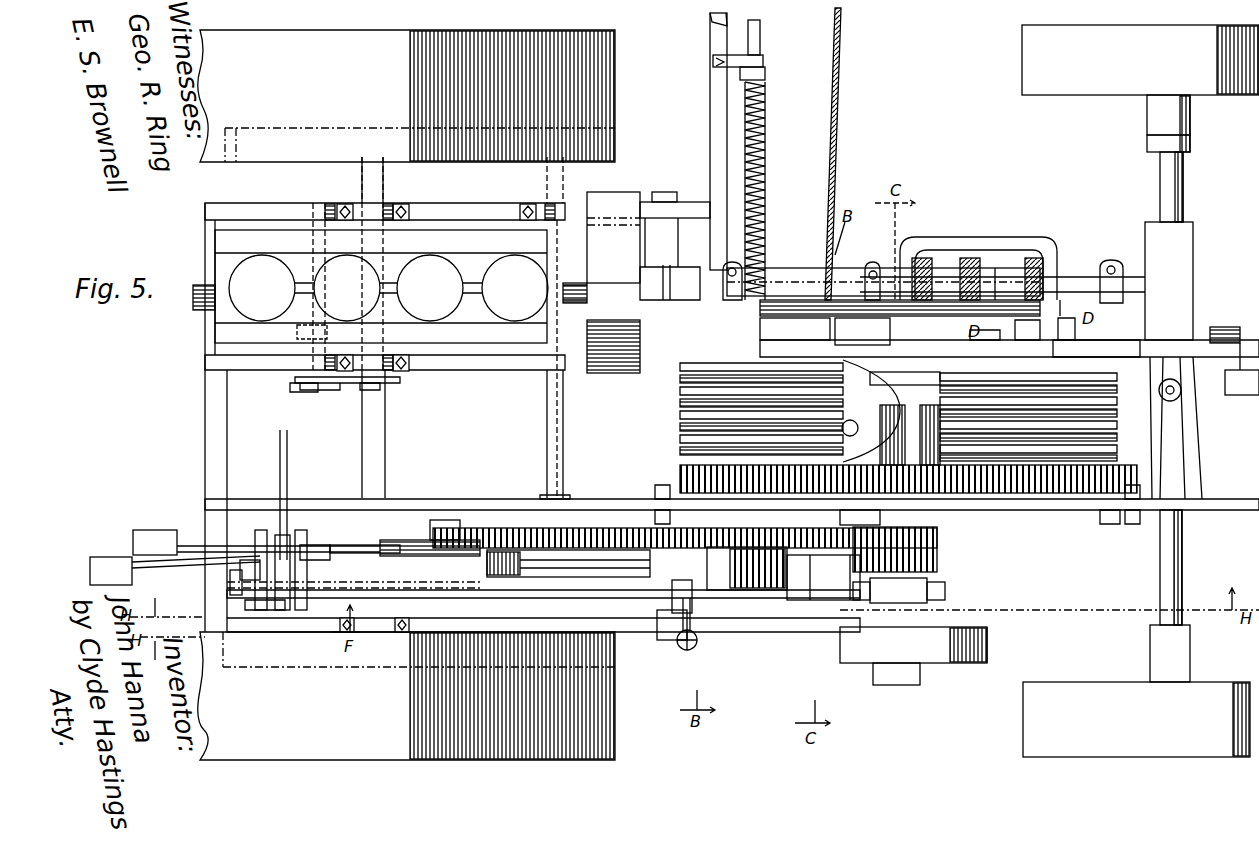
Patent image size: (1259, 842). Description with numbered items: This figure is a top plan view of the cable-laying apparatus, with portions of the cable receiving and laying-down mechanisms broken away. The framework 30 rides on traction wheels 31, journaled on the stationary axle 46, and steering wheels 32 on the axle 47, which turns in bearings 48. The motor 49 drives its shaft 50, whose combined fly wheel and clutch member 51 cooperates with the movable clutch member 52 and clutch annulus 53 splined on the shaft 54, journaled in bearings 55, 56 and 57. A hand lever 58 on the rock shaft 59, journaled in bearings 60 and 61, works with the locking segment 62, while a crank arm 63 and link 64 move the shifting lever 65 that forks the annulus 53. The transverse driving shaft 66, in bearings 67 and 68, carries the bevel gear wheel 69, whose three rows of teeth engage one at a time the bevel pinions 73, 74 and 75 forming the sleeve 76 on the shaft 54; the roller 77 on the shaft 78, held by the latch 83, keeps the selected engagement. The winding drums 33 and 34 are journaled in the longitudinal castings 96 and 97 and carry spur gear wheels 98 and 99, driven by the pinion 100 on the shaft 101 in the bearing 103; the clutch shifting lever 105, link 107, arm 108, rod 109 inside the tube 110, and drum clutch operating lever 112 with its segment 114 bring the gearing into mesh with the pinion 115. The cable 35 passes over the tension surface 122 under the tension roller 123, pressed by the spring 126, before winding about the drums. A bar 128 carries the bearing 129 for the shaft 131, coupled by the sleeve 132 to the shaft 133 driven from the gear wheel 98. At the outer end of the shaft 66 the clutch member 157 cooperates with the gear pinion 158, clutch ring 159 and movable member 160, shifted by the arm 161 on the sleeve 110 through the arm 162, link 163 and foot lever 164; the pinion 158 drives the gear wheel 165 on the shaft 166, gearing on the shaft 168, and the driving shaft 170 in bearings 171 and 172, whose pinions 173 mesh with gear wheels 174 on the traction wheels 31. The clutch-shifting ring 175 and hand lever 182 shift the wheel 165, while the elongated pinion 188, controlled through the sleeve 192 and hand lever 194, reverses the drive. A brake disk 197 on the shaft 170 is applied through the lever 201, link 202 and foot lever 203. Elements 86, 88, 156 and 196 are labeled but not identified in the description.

The framework 30 is at (1228, 510).
The traction wheels 31 is at (605, 58).
The steering wheels 32 is at (1082, 80).
The winding drum 33 is at (680, 385).
The winding drum 34 is at (535, 760).
The cable 35 is at (838, 95).
The stationary axle 46 is at (385, 430).
The axle 47 is at (1160, 182).
The bearings 48 is at (1190, 452).
The motor 49 is at (388, 288).
The motor shaft 50 is at (193, 295).
The combined fly wheel and clutch member 51 is at (605, 203).
The movable clutch member 52 is at (645, 265).
The clutch annulus 53 is at (675, 275).
The shaft 54 is at (765, 232).
The bearing 55 is at (742, 268).
The bearing 56 is at (860, 268).
The bearing 57 is at (1113, 262).
The hand lever 58 is at (370, 384).
The rock shaft 59 is at (316, 203).
The bearing 60 is at (300, 372).
The bearing 61 is at (305, 210).
The locking segment 62 is at (292, 383).
The crank arm 63 is at (297, 333).
The link 64 is at (462, 322).
The shifting lever 65 is at (650, 300).
The transverse driving shaft 66 is at (940, 545).
The bearing 67 is at (905, 369).
The bearing 68 is at (869, 515).
The bevel gear wheel 69 is at (795, 329).
The bevel gear pinion 73 is at (1033, 258).
The bevel gear pinion 74 is at (975, 258).
The bevel gear pinion 75 is at (916, 258).
The elongated sleeve 76 is at (950, 275).
The roller 77 is at (1020, 300).
The shaft 78 is at (1045, 338).
The latch 83 is at (1105, 385).
The gear housing 86 is at (1048, 242).
The bearing 88 is at (900, 282).
The longitudinal casting 96 is at (862, 332).
The longitudinal casting 97 is at (1105, 505).
The spur gear wheel 98 is at (680, 478).
The spur gear wheel 99 is at (1105, 430).
The spur gear pinion 100 is at (930, 500).
The shaft 101 is at (895, 435).
The bearing 103 is at (880, 493).
The clutch shifting lever 105 is at (1010, 505).
The link 107 is at (655, 518).
The arm 108 is at (945, 605).
The rock shaft 109 is at (950, 595).
The hollow rock shaft 110 is at (353, 580).
The drum clutch operating lever 112 is at (288, 465).
The segment 114 is at (285, 540).
The gear pinion 115 is at (960, 495).
The tension surface 122 is at (850, 402).
The spring-pressed tension roller 123 is at (1245, 395).
The helically-coiled contractile spring 126 is at (1222, 327).
The bar 128 is at (710, 120).
The bearing 129 is at (765, 58).
The shaft 131 is at (762, 26).
The sleeve 132 is at (755, 296).
The shaft 133 is at (680, 423).
The spring 156 is at (765, 130).
The clutch member 157 is at (895, 663).
The gear pinion 158 is at (945, 568).
The grooved clutch ring 159 is at (905, 610).
The movable clutch member 160 is at (520, 536).
The clutch shifting arm 161 is at (845, 640).
The arm 162 is at (308, 575).
The link 163 is at (305, 535).
The foot lever 164 is at (155, 530).
The gear wheel 165 is at (785, 600).
The shaft 166 is at (810, 640).
The shaft 168 is at (700, 640).
The driving shaft 170 is at (552, 440).
The bearing 171 is at (545, 495).
The bearing 172 is at (528, 206).
The pinion 173 is at (615, 140).
The gear wheel 174 is at (298, 128).
The grooved clutch-shifting ring 175 is at (800, 620).
The hand lever 182 is at (245, 570).
The elongated gear pinion 188 is at (695, 625).
The sleeve 192 is at (452, 623).
The hand lever 194 is at (258, 535).
The bar 196 is at (250, 610).
The brake disk 197 is at (620, 578).
The lever 201 is at (465, 520).
The link 202 is at (412, 534).
The foot lever 203 is at (105, 557).